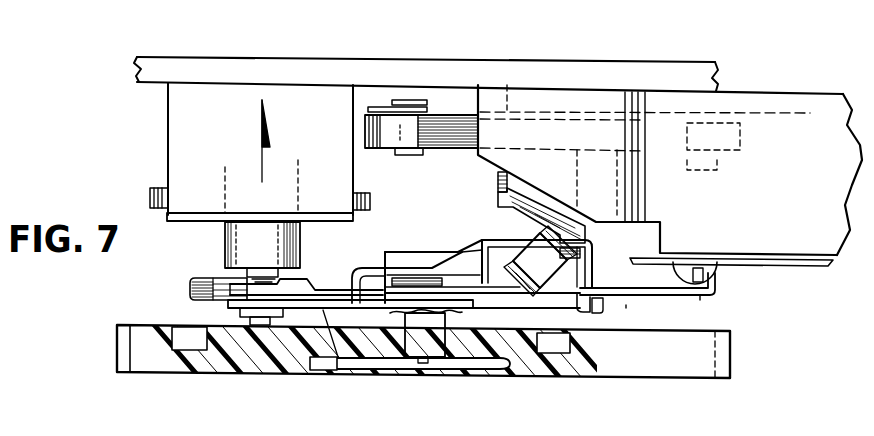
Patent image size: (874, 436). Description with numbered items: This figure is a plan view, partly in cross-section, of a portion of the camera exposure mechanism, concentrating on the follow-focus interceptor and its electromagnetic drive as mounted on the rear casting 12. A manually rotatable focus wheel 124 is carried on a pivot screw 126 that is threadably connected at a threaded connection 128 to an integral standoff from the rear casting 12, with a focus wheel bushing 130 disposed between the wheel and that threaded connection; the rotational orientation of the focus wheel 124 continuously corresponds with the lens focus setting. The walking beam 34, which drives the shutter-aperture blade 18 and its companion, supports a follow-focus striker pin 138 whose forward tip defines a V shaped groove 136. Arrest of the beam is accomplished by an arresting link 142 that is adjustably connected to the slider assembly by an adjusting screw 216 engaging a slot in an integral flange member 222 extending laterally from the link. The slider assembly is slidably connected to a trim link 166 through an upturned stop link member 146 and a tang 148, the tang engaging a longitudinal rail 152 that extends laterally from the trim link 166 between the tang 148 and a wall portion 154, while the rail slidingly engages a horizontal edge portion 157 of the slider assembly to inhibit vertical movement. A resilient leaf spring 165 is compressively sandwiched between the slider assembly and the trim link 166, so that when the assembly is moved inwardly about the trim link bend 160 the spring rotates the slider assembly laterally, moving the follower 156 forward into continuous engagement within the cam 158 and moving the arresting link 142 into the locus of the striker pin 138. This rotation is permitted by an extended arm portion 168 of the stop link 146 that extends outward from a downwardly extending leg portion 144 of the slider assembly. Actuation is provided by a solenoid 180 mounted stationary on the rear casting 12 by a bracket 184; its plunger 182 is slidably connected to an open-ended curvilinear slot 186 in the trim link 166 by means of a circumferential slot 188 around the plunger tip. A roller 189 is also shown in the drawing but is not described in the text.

The rear casting 12 is at (375, 58).
The shutter-aperture blade 18 is at (447, 110).
The walking beam 34 is at (365, 122).
The focus wheel 124 is at (195, 373).
The pivot screw 126 is at (487, 370).
The threaded connection 128 is at (417, 255).
The focus wheel bushing 130 is at (408, 333).
The V shaped slot or groove 136 is at (515, 204).
The follow-focus striker pin 138 is at (493, 178).
The arresting link 142 is at (574, 245).
The leg portion 144 is at (590, 233).
The stop link member 146 is at (638, 313).
The tang 148 is at (352, 272).
The longitudinal rail 152 is at (448, 365).
The wall portion 154 is at (330, 310).
The follower 156 is at (293, 378).
The horizontal edge portion 157 is at (368, 270).
The cam 158 is at (187, 342).
The trim link bend 160 is at (717, 277).
The leaf spring 165 is at (425, 278).
The trim link 166 is at (700, 297).
The arm portion 168 is at (598, 270).
The solenoid 180 is at (225, 230).
The solenoid plunger 182 is at (262, 278).
The bracket 184 is at (168, 130).
The curvilinear slot 186 is at (350, 282).
The circumferential slot 188 is at (190, 292).
The roller 189 is at (683, 270).
The adjusting screw 216 is at (546, 278).
The integral flange member 222 is at (502, 294).